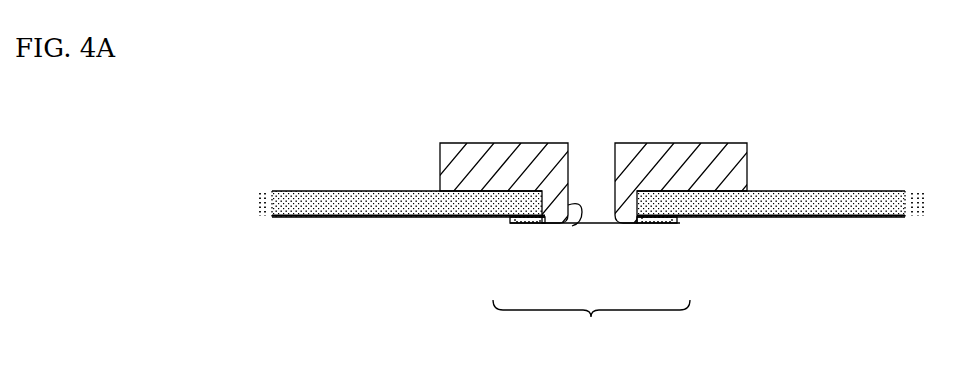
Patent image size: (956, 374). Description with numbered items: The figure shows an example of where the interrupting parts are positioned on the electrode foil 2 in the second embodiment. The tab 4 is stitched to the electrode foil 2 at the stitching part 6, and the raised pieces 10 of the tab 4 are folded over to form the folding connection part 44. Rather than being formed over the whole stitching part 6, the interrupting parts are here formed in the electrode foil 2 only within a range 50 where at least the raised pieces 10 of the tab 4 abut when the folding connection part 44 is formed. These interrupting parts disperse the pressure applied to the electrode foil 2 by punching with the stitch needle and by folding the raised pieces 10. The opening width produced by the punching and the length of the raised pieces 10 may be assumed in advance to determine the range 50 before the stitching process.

The electrode foil 2 is at (323, 191).
The tab 4 is at (465, 143).
The folding connection part 44 is at (575, 224).
The stitching part 6 is at (591, 286).
The raised pieces 10 is at (515, 225).
The range 50 is at (537, 226).